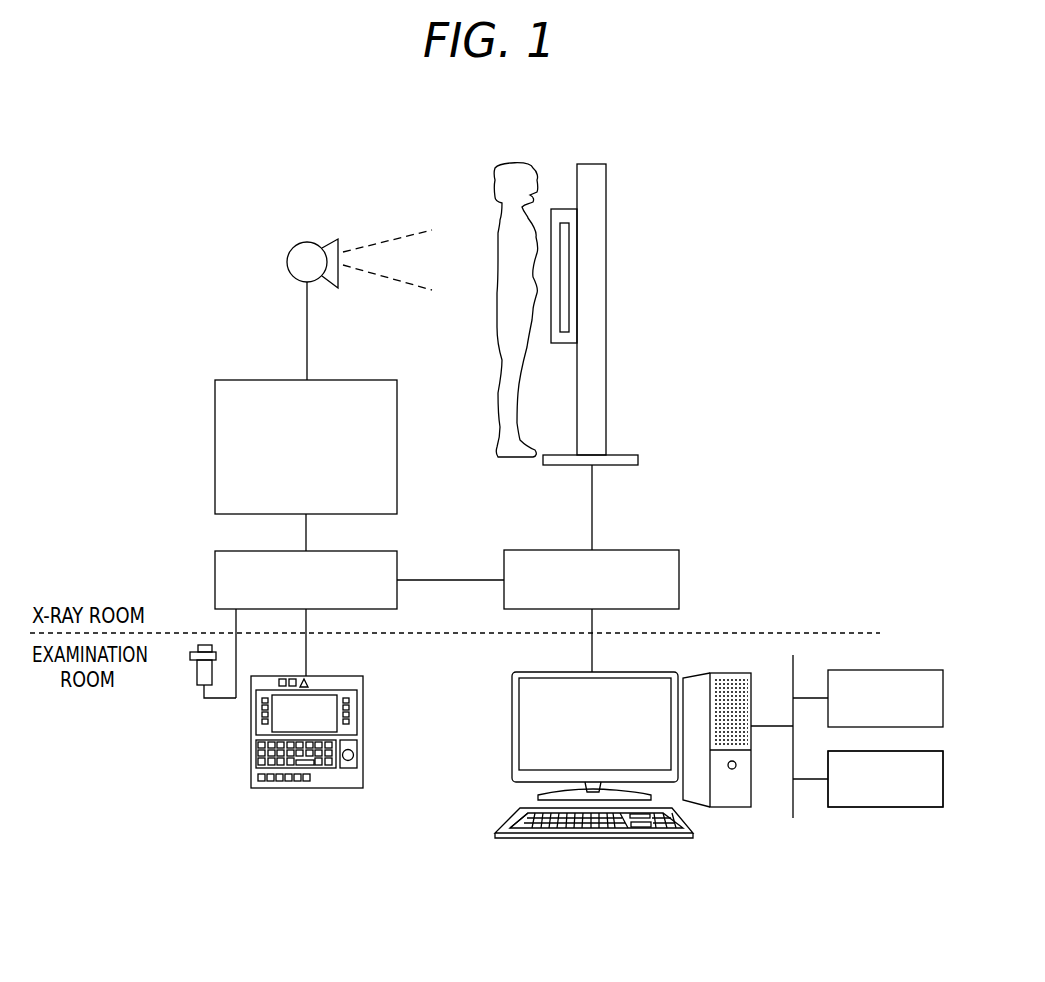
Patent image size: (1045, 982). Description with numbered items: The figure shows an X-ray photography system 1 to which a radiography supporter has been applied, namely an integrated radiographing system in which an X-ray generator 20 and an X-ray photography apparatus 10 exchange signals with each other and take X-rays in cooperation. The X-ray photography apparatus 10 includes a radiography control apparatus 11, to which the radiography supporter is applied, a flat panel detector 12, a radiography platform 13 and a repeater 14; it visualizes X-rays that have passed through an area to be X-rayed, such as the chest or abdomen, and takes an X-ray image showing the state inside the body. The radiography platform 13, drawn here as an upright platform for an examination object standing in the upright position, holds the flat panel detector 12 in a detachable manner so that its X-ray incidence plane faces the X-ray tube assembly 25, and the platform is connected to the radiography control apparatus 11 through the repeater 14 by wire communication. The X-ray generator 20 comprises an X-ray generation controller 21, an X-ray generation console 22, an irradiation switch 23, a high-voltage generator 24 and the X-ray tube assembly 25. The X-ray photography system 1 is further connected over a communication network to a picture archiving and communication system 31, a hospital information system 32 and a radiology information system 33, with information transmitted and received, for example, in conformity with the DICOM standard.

The X-ray photography system 1 is at (700, 204).
The X-ray photography apparatus 10 is at (768, 875).
The radiography control apparatus 11 is at (512, 735).
The flat panel detector 12 is at (560, 287).
The radiography platform 13 is at (600, 397).
The repeater 14 is at (679, 568).
The X-ray generator 20 is at (453, 875).
The X-ray generation controller 21 is at (215, 573).
The X-ray generation console 22 is at (255, 728).
The irradiation switch 23 is at (197, 684).
The high-voltage generator 24 is at (215, 403).
The X-ray tube assembly 25 is at (288, 263).
The picture archiving and communication system 31 is at (888, 670).
The hospital information system 32 is at (888, 807).
The radiology information system 33 is at (885, 779).